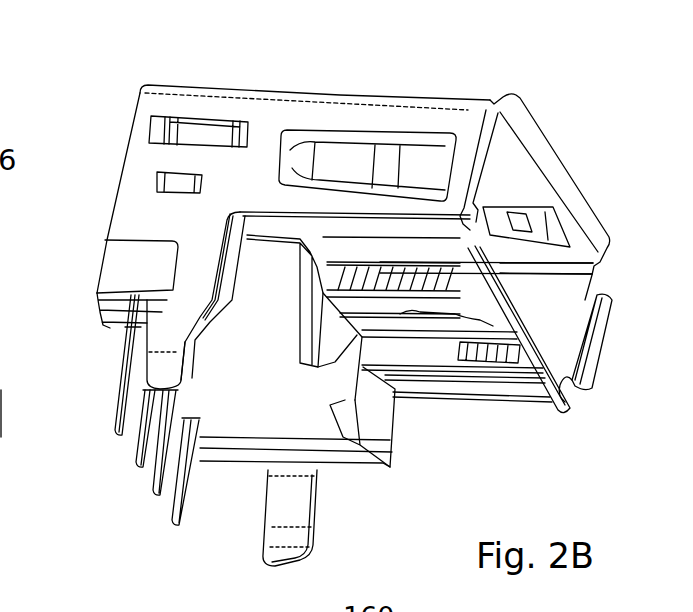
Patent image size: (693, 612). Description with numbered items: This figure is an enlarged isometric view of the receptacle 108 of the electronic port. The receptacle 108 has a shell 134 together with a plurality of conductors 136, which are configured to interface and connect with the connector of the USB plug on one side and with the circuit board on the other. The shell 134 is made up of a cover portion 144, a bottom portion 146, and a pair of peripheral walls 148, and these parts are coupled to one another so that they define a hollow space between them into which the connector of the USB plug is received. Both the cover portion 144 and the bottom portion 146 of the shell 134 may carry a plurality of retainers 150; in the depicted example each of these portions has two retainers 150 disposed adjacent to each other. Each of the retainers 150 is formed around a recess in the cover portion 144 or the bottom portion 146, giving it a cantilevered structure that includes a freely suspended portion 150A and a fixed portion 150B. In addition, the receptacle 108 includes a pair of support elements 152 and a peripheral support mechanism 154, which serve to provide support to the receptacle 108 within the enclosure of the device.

The receptacle 108 is at (92, 104).
The shell 134 is at (133, 220).
The conductors 136 is at (116, 393).
The cover portion 144 is at (360, 93).
The bottom portion 146 is at (532, 230).
The peripheral walls 148 is at (233, 165).
The retainers 150 is at (447, 357).
The freely suspended portion 150A is at (537, 403).
The fixed portion 150B is at (322, 296).
The support elements 152 is at (125, 334).
The peripheral support mechanism 154 is at (327, 163).